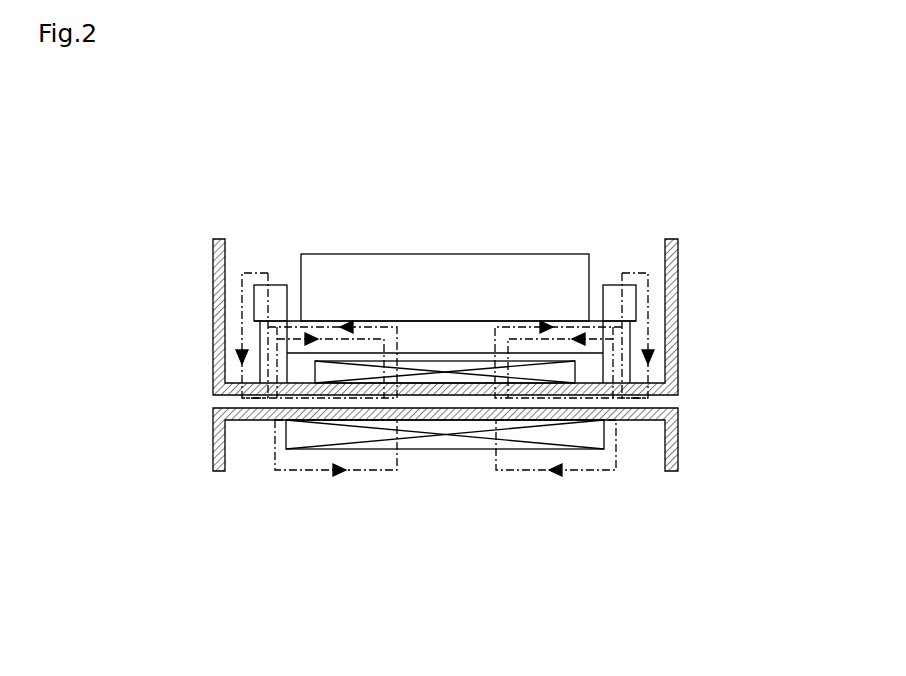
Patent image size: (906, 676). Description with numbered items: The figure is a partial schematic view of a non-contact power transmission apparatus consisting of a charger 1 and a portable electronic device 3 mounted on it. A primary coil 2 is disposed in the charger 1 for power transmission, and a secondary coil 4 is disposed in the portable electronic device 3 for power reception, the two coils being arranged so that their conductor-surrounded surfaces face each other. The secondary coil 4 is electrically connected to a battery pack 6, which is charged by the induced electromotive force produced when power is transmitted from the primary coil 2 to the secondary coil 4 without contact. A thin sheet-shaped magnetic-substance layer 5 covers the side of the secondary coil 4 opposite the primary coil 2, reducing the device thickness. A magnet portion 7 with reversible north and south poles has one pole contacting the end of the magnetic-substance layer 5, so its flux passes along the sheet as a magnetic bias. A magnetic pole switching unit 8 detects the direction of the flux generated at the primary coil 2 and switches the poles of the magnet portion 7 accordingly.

The charger 1 is at (685, 442).
The primary coil 2 is at (443, 452).
The portable electronic device 3 is at (683, 332).
The secondary coil 4 is at (463, 355).
The magnetic-substance layer 5 is at (428, 335).
The battery pack 6 is at (383, 268).
The magnet portion 7 is at (262, 372).
The magnetic pole switching unit 8 is at (275, 300).